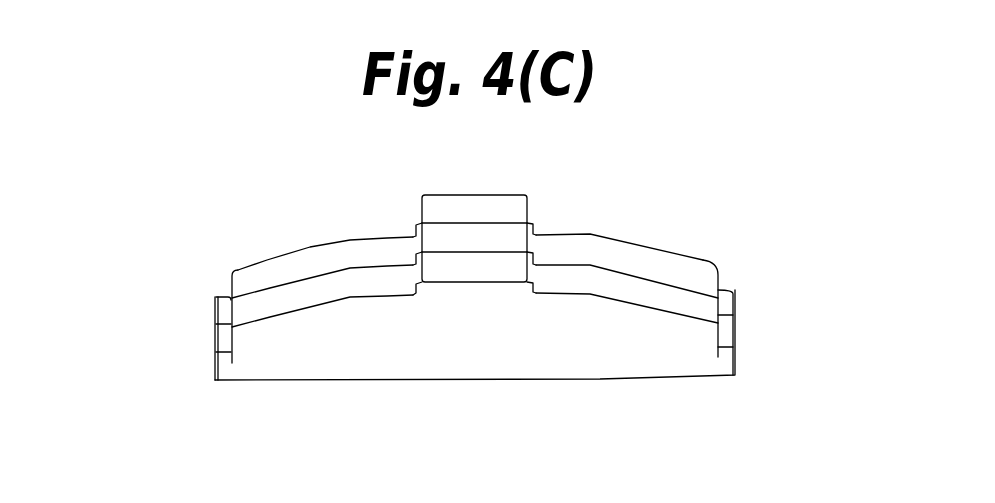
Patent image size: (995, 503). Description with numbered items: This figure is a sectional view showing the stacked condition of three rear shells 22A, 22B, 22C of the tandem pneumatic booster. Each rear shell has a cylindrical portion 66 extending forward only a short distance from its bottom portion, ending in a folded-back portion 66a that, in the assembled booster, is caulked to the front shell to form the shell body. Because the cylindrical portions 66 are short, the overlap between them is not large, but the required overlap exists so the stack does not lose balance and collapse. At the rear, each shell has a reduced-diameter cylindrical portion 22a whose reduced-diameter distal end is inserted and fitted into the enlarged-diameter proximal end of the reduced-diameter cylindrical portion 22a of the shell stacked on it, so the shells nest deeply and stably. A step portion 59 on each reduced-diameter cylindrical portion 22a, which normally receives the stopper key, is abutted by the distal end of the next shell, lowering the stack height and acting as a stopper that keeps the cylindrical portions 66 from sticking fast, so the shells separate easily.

The rear shell 22A is at (668, 308).
The rear shell 22B is at (634, 272).
The rear shell 22C is at (578, 234).
The reduced-diameter cylindrical portion 22a is at (413, 260).
The step portion 59 is at (526, 226).
The cylindrical portion 66 is at (227, 282).
The folded-back portion 66a is at (217, 308).